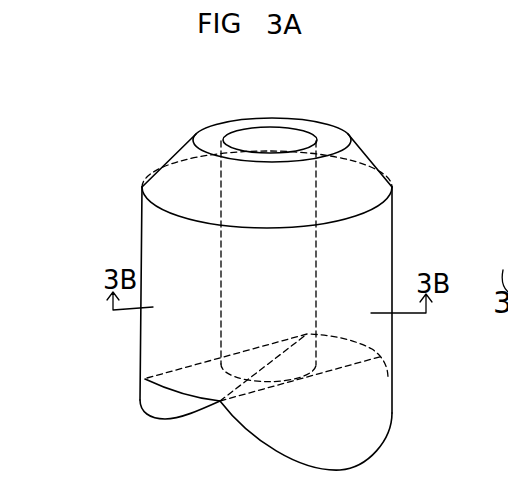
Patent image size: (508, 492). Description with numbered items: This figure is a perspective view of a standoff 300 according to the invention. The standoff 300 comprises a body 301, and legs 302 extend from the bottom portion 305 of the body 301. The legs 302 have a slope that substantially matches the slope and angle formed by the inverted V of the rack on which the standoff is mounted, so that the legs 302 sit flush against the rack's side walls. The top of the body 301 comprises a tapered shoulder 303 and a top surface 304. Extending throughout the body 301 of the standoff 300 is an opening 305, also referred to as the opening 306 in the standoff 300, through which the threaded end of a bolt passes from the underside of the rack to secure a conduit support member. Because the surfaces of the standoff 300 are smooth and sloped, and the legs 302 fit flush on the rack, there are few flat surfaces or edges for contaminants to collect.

The standoff 300 is at (127, 243).
The body 301 is at (364, 260).
The legs 302 is at (157, 405).
The tapered shoulder 303 is at (351, 190).
The top surface 304 is at (334, 140).
The opening 305 is at (271, 137).
The opening in standoff 306 is at (203, 400).